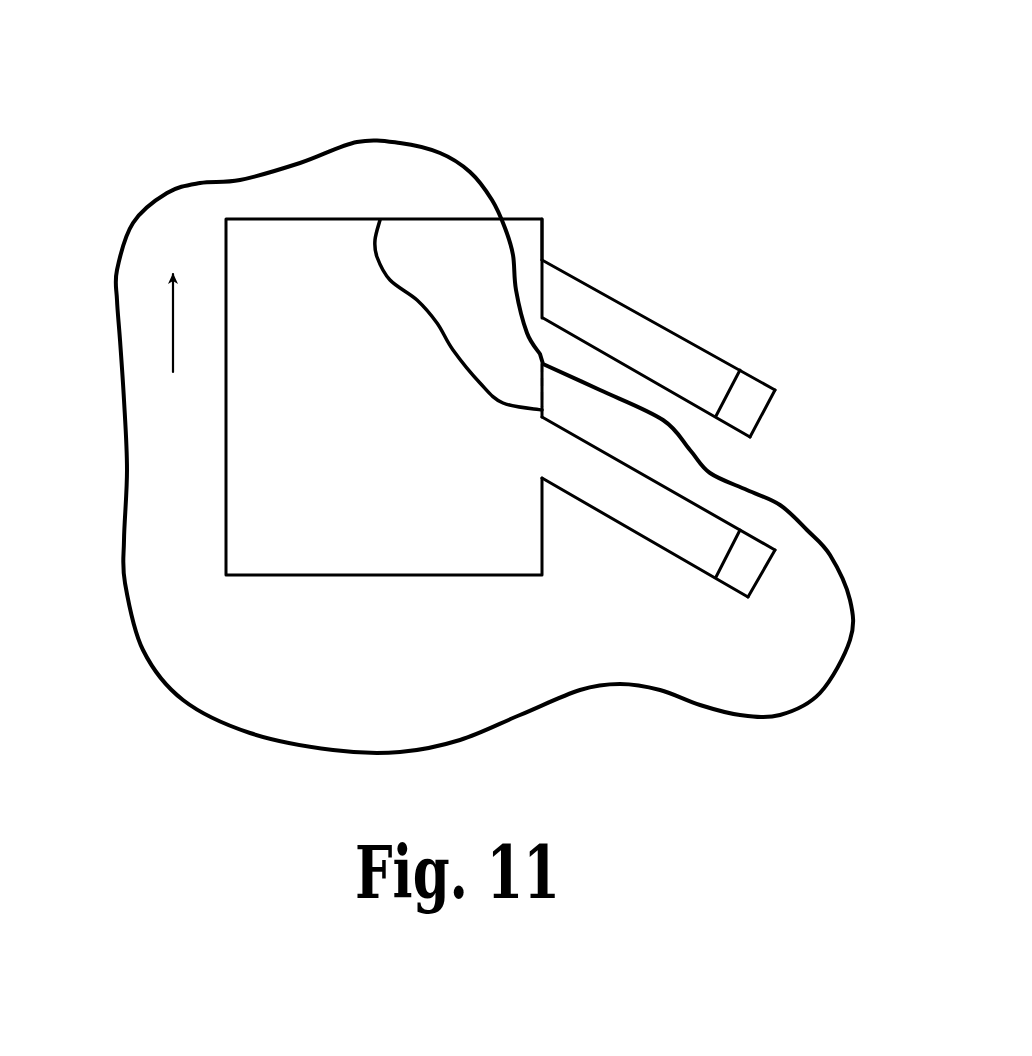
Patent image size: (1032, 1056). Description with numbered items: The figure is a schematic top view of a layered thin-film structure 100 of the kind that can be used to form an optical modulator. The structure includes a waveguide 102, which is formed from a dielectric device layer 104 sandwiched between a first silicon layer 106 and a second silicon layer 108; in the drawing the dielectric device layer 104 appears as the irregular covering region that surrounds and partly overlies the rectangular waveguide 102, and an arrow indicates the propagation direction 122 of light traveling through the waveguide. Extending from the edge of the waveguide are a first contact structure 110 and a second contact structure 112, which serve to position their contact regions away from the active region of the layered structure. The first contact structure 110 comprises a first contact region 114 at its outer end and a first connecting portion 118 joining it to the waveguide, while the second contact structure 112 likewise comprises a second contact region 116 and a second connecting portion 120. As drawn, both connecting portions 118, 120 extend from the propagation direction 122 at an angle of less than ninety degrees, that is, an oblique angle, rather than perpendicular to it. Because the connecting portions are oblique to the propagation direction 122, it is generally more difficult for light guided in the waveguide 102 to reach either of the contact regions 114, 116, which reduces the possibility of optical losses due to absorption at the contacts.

The layered thin-film structure 100 is at (541, 114).
The waveguide 102 is at (419, 594).
The dielectric device layer 104 is at (277, 655).
The first silicon layer 106 is at (527, 240).
The second silicon layer 108 is at (260, 472).
The first contact structure 110 is at (637, 316).
The second contact structure 112 is at (704, 513).
The first contact region 114 is at (743, 403).
The second contact region 116 is at (750, 562).
The first connecting portion 118 is at (698, 372).
The second connecting portion 120 is at (609, 500).
The propagation direction 122 is at (172, 332).